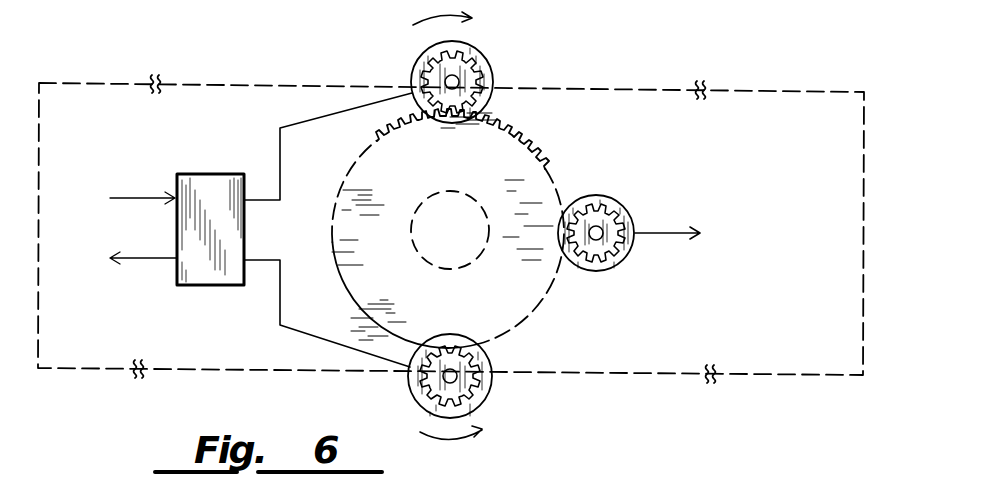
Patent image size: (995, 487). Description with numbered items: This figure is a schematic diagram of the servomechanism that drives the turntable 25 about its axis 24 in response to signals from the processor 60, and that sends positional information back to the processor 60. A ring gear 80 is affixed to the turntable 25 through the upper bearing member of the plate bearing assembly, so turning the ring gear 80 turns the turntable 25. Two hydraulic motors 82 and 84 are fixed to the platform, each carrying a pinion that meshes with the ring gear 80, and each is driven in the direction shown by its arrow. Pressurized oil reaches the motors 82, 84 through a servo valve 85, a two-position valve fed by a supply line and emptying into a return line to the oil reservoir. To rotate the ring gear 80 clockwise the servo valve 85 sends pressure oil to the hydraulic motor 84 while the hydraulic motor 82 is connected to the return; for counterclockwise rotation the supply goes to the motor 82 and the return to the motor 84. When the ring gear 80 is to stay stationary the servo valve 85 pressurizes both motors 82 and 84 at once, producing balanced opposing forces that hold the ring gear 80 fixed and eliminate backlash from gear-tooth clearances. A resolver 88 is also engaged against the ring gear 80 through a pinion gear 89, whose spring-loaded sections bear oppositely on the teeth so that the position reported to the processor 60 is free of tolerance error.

The turntable 25 is at (255, 82).
The servo valve 85 is at (212, 173).
The ring gear 80 is at (535, 143).
The axis 24 is at (453, 190).
The hydraulic motor 82 is at (480, 54).
The hydraulic motor 84 is at (484, 400).
The resolver 88 is at (610, 193).
The pinion gear 89 is at (620, 260).
The processor 60 is at (746, 237).